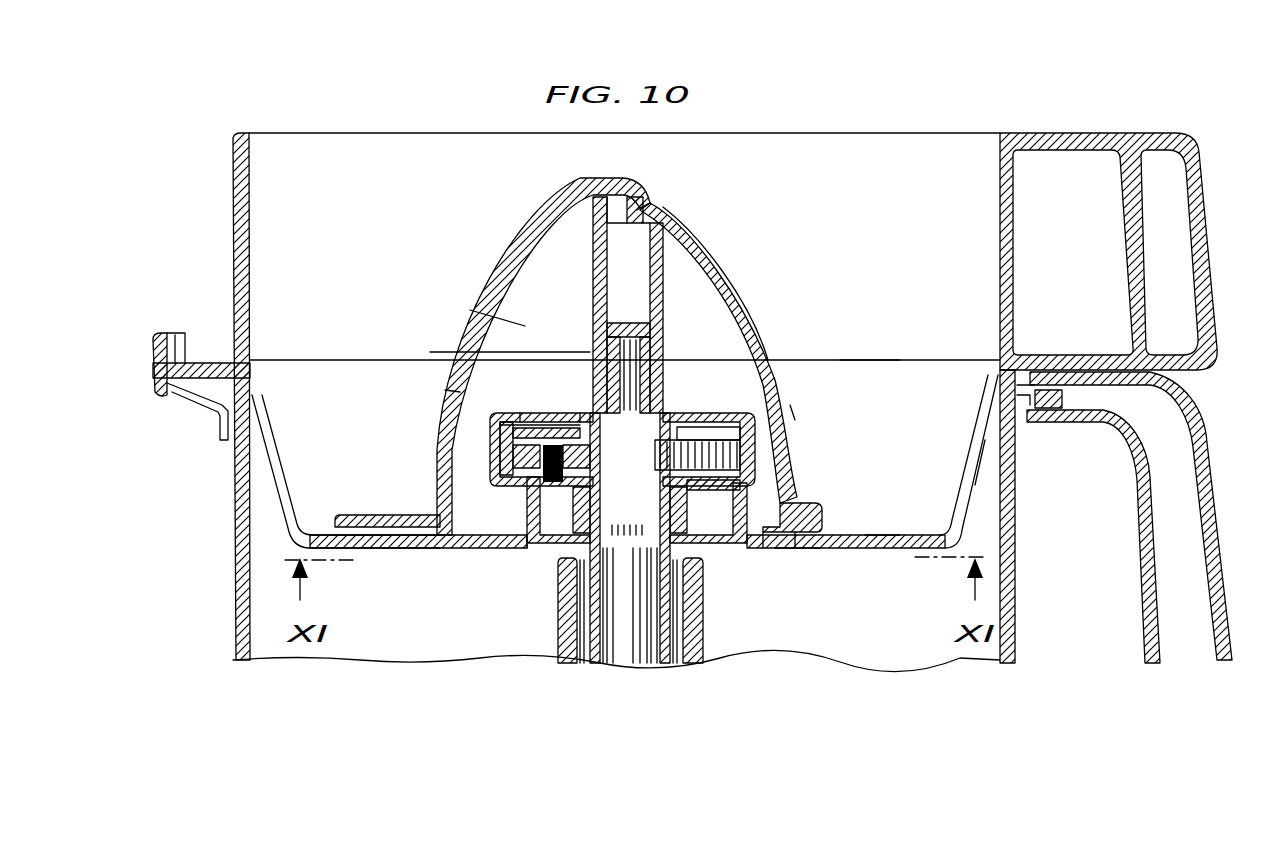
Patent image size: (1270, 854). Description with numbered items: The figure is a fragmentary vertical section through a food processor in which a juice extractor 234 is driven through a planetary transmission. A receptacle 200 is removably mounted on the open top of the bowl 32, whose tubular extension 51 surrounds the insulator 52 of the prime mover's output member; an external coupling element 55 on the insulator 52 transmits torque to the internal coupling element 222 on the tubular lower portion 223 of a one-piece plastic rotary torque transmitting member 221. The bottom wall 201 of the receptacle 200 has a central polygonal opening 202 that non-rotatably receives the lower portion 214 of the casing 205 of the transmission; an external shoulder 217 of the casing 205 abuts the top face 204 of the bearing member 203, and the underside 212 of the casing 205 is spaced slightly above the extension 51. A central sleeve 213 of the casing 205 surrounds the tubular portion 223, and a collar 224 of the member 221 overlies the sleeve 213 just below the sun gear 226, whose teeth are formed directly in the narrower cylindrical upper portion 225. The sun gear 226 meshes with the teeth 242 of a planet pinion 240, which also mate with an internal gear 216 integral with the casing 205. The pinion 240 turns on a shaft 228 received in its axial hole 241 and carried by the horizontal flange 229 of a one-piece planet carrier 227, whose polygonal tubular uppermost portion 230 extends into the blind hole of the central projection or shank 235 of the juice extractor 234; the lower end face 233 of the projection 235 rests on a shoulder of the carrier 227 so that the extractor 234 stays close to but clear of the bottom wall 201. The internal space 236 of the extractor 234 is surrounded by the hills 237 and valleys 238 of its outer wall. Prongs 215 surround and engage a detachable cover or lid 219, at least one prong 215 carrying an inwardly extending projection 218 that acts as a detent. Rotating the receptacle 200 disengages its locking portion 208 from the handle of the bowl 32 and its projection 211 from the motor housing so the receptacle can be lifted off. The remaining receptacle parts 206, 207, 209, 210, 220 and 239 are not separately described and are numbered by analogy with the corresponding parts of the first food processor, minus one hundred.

The receptacle 200 is at (270, 286).
The bottom wall 201 is at (897, 535).
The opening 202 is at (755, 548).
The bearing member 203 is at (790, 548).
The top face 204 is at (760, 480).
The casing 205 is at (770, 450).
The base plate 206 is at (900, 548).
The rim profile 207 is at (1073, 132).
The locking portion 208 is at (1040, 397).
The lid insert 209 is at (1062, 400).
The outer leg 210 is at (1027, 417).
The projection 211 is at (212, 363).
The underside 212 is at (553, 547).
The sleeve 213 is at (567, 545).
The lower portion 214 is at (796, 552).
The prongs 215 is at (793, 412).
The internal gear 216 is at (500, 425).
The external shoulder 217 is at (470, 543).
The inwardly extending projection 218 is at (530, 395).
The cover 219 is at (730, 413).
The rotor assembly 220 is at (440, 352).
The rotary torque transmitting member 221 is at (587, 600).
The internal coupling element 222 is at (643, 600).
The tubular lower portion 223 is at (575, 615).
The collar 224 is at (767, 510).
The cylindrical upper portion 225 is at (845, 371).
The sun gear 226 is at (770, 457).
The planet carrier 227 is at (578, 413).
The shaft 228 is at (548, 452).
The horizontal flange 229 is at (527, 413).
The tubular uppermost portion 230 is at (665, 352).
The lower end face 233 is at (665, 398).
The juice extractor 234 is at (478, 284).
The central projection 235 is at (592, 303).
The internal space 236 is at (523, 325).
The hills 237 is at (447, 390).
The valleys 238 is at (750, 308).
The mounting plate 239 is at (382, 513).
The planet pinion 240 is at (630, 538).
The axial hole 241 is at (510, 440).
The teeth 242 is at (515, 455).
The bowl 32 is at (1027, 597).
The tubular extension 51 is at (703, 637).
The insulator 52 is at (630, 650).
The external coupling element 55 is at (680, 672).